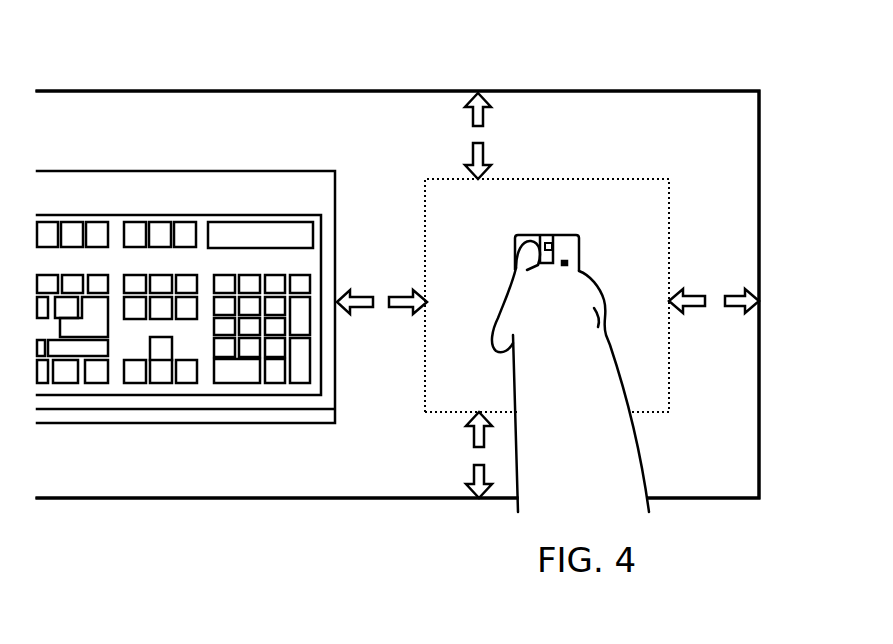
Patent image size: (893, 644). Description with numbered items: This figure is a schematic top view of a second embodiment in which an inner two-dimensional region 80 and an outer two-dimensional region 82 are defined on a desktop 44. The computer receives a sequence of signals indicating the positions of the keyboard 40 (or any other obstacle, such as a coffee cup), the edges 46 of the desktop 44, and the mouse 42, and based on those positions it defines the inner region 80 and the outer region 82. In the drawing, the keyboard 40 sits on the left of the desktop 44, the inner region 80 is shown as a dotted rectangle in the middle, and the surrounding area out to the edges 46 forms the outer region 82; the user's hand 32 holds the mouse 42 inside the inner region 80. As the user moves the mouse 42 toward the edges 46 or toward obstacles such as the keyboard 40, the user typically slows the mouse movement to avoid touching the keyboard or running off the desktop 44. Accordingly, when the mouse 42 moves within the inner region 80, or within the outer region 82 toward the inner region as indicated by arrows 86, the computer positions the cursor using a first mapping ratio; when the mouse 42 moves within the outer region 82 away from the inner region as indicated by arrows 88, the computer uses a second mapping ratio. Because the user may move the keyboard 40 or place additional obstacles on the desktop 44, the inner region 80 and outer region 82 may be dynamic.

The desktop 44 is at (708, 45).
The edges 46 is at (632, 91).
The outer 2D region 82 is at (378, 190).
The inner 2D region 80 is at (640, 182).
The arrows 88 is at (470, 112).
The arrows 86 is at (470, 155).
The keyboard 40 is at (164, 184).
The mouse 42 is at (580, 240).
The hand 32 is at (520, 303).